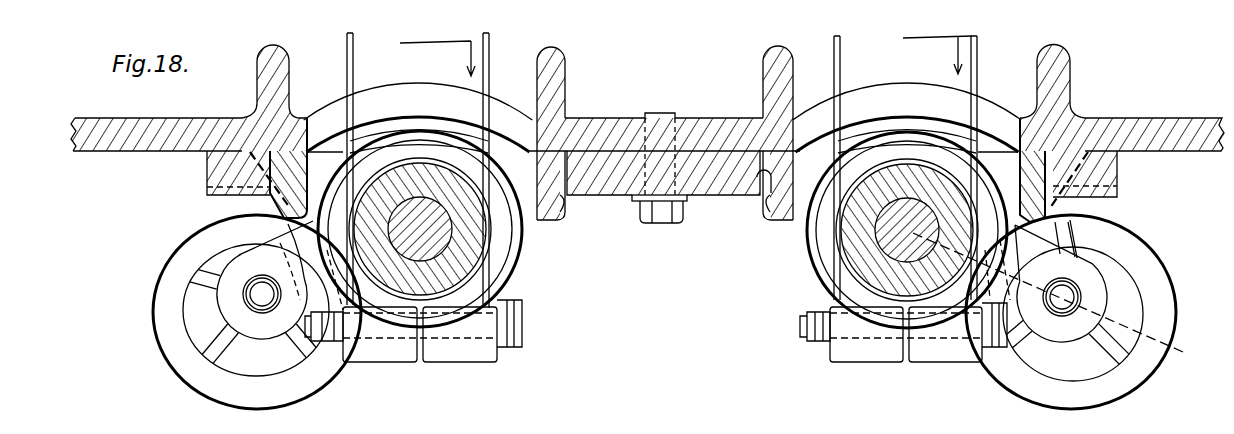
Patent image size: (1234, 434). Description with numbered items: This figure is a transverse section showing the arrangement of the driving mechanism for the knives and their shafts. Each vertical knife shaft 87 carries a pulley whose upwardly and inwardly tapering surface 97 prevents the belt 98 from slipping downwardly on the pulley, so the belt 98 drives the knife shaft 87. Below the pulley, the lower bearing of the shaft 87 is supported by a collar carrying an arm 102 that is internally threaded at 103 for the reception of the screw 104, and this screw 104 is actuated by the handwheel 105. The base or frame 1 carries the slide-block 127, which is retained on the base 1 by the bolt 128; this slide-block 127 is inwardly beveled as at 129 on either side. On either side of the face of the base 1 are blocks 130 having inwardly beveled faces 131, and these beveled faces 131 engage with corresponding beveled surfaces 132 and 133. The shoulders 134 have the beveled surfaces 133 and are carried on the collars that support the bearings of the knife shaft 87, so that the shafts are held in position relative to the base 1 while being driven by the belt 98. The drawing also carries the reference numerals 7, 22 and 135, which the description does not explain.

The base or frame 1 is at (706, 120).
The frame bar 7 is at (102, 152).
The axle line 22 is at (1053, 220).
The vertical shaft 87 is at (418, 207).
The upwardly and inwardly tapering surface 97 is at (413, 170).
The belt 98 is at (352, 58).
The arm 102 is at (245, 297).
The internal thread 103 is at (238, 310).
The screw 104 is at (258, 291).
The handwheel 105 is at (160, 322).
The slide-block 127 is at (622, 205).
The bolt 128 is at (667, 223).
The inward bevel of slide-block 129 is at (588, 198).
The blocks 130 is at (207, 189).
The inwardly beveled faces 131 is at (250, 160).
The beveled surface 132 is at (548, 222).
The beveled surface 133 is at (292, 112).
The shoulders 134 is at (309, 148).
The caster bracket 135 is at (262, 213).